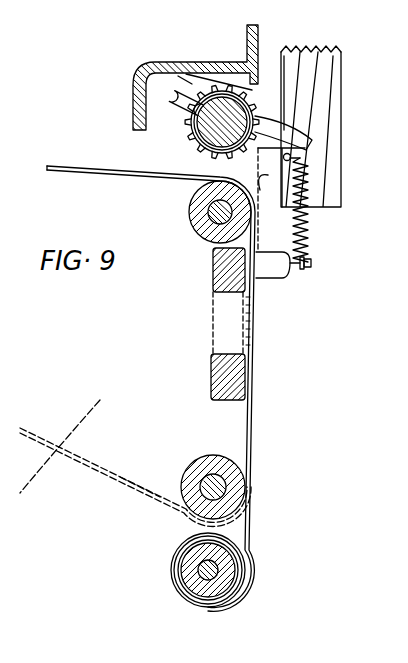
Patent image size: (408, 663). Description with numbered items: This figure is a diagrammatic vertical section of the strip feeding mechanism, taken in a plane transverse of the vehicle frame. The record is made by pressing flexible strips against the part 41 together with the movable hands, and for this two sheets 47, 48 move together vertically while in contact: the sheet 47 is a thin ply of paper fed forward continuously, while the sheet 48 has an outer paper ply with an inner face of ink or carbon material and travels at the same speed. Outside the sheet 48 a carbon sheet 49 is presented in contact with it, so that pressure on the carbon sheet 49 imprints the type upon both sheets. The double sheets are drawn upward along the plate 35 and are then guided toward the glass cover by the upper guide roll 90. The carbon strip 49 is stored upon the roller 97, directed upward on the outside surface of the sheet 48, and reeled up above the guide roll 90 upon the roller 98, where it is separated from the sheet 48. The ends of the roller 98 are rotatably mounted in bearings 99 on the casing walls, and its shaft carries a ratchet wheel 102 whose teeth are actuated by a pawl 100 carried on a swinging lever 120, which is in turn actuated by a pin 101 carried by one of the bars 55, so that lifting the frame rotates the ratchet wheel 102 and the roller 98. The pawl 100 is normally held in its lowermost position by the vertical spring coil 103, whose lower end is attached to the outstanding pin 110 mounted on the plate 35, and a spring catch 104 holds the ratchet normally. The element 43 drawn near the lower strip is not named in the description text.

The spring catch 104 is at (247, 63).
The roller 98 is at (258, 110).
The pawl 100 is at (276, 79).
The bars 55 is at (337, 101).
The swinging lever 120 is at (290, 146).
The sheet 48 is at (102, 166).
The ratchet wheel 102 is at (194, 138).
The sheet 47 is at (84, 172).
The upper guide roll 90 is at (200, 212).
The carbon sheet 49 is at (246, 528).
The pin 101 is at (278, 192).
The vertical spring coil 103 is at (310, 232).
The plate 35 is at (213, 367).
The outstanding pin 110 is at (296, 270).
The bearings 99 is at (210, 472).
The part 41 is at (103, 468).
The belt 43 is at (143, 494).
The roller 97 is at (222, 566).